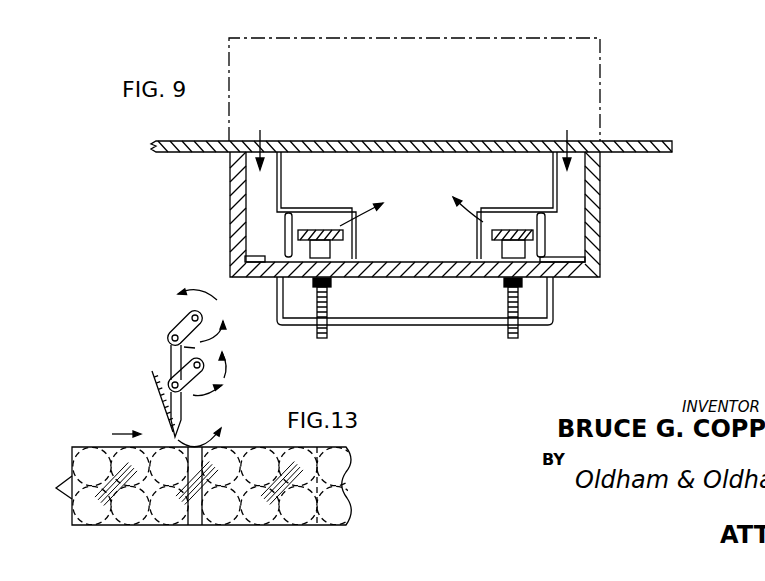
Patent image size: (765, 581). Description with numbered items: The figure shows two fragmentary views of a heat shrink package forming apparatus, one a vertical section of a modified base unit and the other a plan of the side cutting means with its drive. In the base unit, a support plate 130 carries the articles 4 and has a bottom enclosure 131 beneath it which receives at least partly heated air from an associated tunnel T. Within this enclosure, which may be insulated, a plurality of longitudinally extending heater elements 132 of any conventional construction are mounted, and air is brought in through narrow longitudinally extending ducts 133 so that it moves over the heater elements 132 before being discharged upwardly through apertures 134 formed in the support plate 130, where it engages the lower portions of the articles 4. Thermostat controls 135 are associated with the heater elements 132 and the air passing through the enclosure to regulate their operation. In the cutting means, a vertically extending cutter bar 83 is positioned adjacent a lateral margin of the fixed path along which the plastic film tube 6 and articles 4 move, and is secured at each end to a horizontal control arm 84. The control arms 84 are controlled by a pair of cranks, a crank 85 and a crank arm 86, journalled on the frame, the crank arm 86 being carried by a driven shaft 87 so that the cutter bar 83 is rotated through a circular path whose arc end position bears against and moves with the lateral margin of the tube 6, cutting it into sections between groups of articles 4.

In FIG. 9, the tunnel T is at (603, 87).
In FIG. 9, the support plate 130 is at (643, 141).
In FIG. 9, the bottom enclosure 131 is at (229, 216).
In FIG. 9, the heater elements 132 is at (342, 223).
In FIG. 9, the ducts 133 is at (283, 185).
In FIG. 9, the apertures 134 is at (443, 141).
In FIG. 9, the thermostat controls 135 is at (340, 251).
In FIG. 13, the articles 4 is at (55, 488).
In FIG. 13, the tube 6 is at (348, 463).
In FIG. 13, the cutter bar 83 is at (177, 436).
In FIG. 13, the control arm 84 is at (181, 413).
In FIG. 13, the crank 85 is at (172, 374).
In FIG. 13, the crank arm 86 is at (177, 322).
In FIG. 13, the driven shaft 87 is at (210, 316).